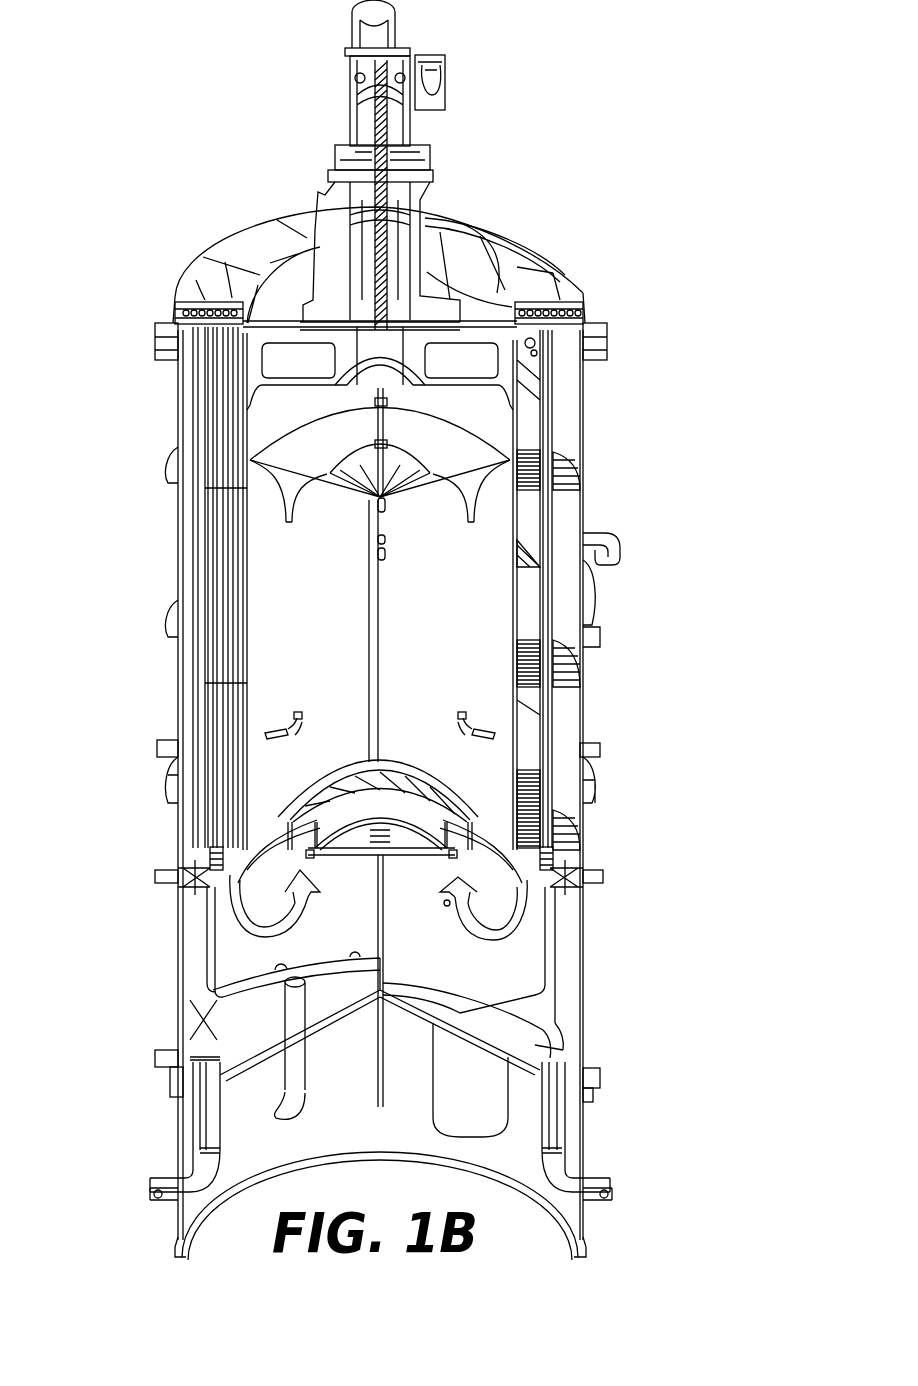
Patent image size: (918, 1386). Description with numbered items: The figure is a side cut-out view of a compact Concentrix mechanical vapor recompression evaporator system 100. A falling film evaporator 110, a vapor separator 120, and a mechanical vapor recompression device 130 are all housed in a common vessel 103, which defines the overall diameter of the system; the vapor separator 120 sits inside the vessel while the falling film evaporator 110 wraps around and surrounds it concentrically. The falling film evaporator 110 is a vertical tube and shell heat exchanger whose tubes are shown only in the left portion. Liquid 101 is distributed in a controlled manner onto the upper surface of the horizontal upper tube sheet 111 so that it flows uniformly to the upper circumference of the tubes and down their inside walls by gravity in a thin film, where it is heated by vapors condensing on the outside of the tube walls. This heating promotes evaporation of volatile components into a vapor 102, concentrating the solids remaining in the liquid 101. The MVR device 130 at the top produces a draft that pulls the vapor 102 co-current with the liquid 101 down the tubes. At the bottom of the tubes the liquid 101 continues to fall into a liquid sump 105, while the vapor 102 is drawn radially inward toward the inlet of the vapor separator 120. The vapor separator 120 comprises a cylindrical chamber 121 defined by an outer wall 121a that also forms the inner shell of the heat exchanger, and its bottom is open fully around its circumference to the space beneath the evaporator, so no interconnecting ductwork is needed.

The evaporator system 100 is at (206, 177).
The mechanical vapor recompression (MVR) device 130 is at (445, 258).
The horizontal upper tube sheet 111 is at (158, 328).
The falling film evaporator 110 is at (178, 440).
The liquid 101 is at (178, 520).
The vapor separator 120 is at (515, 708).
The cylindrical chamber 121 is at (487, 608).
The outer wall 121a is at (517, 618).
The vapor 102 is at (200, 875).
The common vessel 103 is at (178, 945).
The liquid sump 105 is at (215, 1022).